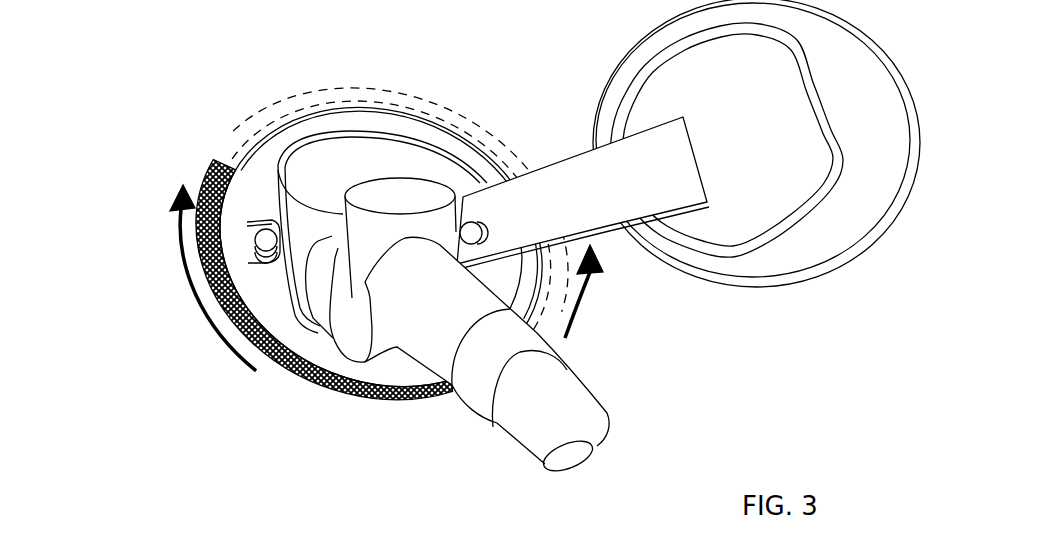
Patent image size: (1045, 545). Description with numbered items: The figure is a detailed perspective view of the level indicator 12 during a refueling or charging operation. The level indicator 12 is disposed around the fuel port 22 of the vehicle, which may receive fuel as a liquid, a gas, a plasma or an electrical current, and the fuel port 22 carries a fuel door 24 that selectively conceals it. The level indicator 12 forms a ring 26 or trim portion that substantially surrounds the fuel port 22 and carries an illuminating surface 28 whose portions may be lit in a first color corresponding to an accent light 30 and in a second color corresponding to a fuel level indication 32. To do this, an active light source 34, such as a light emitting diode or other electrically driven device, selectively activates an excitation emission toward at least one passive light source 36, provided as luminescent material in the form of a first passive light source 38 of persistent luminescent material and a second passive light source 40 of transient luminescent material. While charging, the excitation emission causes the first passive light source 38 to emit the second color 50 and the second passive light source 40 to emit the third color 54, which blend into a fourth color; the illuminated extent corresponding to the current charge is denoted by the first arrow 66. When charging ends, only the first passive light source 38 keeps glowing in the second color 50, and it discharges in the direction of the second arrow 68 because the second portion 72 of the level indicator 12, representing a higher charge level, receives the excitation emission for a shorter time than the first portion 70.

The level indicator 12 is at (232, 145).
The fuel port 22 is at (370, 160).
The fuel door 24 is at (867, 203).
The ring 26 is at (410, 97).
The illuminating surface 28 is at (382, 398).
The accent light 30 is at (248, 75).
The fuel level indication 32 is at (225, 156).
The active light source 34 is at (245, 334).
The passive light source 36 is at (168, 250).
The first passive light source 38 is at (198, 245).
The second passive light source 40 is at (229, 186).
The second color 50 is at (220, 303).
The third color 54 is at (266, 240).
The first arrow 66 is at (193, 297).
The second arrow 68 is at (587, 300).
The first portion 70 is at (305, 378).
The second portion 72 is at (498, 123).